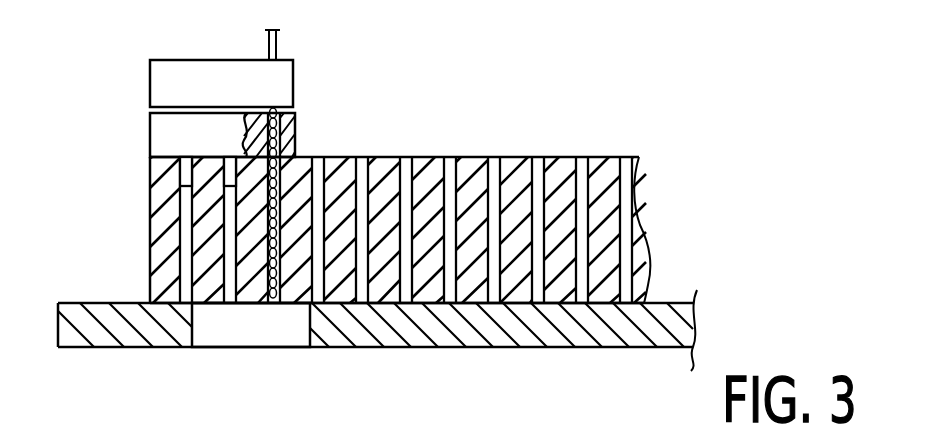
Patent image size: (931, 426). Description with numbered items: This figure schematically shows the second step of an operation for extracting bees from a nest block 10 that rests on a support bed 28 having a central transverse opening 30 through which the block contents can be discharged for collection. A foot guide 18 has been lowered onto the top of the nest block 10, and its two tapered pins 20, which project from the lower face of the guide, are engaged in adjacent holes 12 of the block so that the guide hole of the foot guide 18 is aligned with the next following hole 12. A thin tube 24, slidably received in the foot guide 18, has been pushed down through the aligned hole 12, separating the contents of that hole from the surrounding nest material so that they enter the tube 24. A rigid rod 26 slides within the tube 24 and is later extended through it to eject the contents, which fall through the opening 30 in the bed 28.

The nest block 10 is at (568, 147).
The holes 12 is at (262, 227).
The foot guide 18 is at (178, 131).
The tapered pins 20 is at (233, 183).
The thin tube 24 is at (286, 168).
The rigid rod 26 is at (317, 92).
The support bed 28 is at (458, 327).
The transverse opening 30 is at (243, 330).